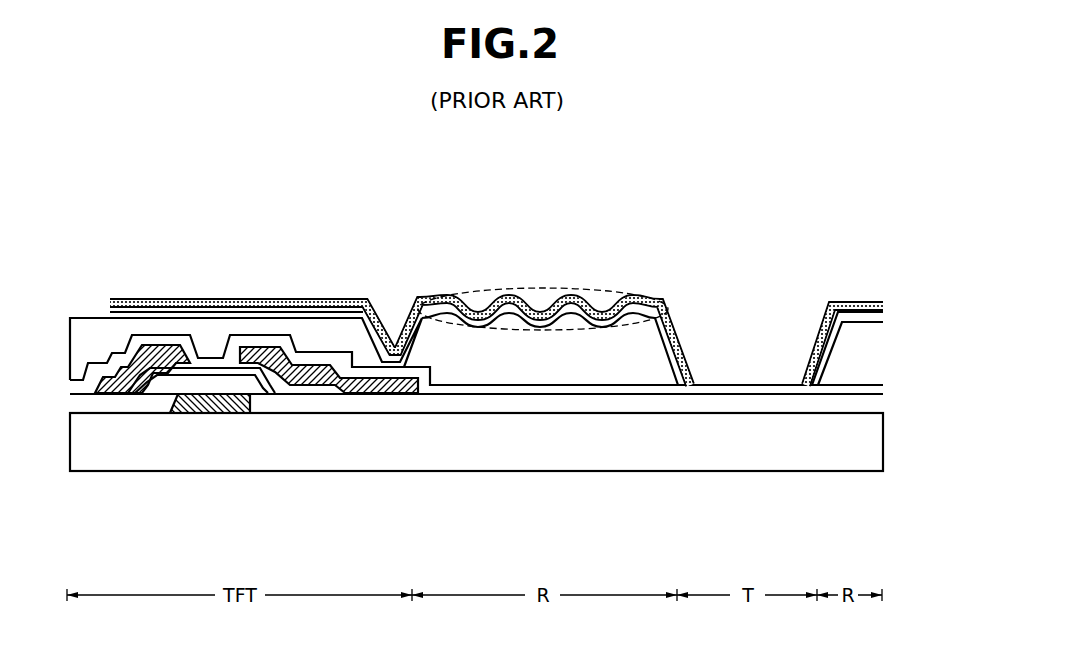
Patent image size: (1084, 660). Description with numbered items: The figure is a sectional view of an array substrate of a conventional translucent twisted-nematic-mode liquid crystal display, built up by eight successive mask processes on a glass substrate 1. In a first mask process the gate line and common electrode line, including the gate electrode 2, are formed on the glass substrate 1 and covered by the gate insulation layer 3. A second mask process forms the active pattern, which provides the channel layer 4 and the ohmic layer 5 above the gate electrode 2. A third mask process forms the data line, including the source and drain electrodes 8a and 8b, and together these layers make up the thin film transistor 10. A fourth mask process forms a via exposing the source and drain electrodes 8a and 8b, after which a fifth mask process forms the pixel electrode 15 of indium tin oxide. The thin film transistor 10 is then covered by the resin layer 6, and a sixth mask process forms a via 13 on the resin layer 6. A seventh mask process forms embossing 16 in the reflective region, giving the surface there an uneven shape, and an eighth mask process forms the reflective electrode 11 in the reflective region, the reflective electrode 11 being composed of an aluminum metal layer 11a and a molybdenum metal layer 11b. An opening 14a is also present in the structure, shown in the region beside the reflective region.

The glass substrate 1 is at (880, 440).
The gate electrode 2 is at (208, 412).
The gate insulation layer 3 is at (272, 405).
The channel layer 4 is at (157, 392).
The ohmic layer 5 is at (132, 392).
The resin layer 6 is at (553, 370).
The source electrode 8a is at (312, 380).
The drain electrode 8b is at (107, 390).
The TFT 10 is at (327, 533).
The reflective electrode 11 is at (237, 240).
The Al metal layer 11a is at (250, 300).
The Mo metal layer 11b is at (296, 300).
The via 13 is at (393, 316).
The opening 14a is at (748, 326).
The pixel electrode 15 is at (748, 392).
The embossing 16 is at (557, 292).